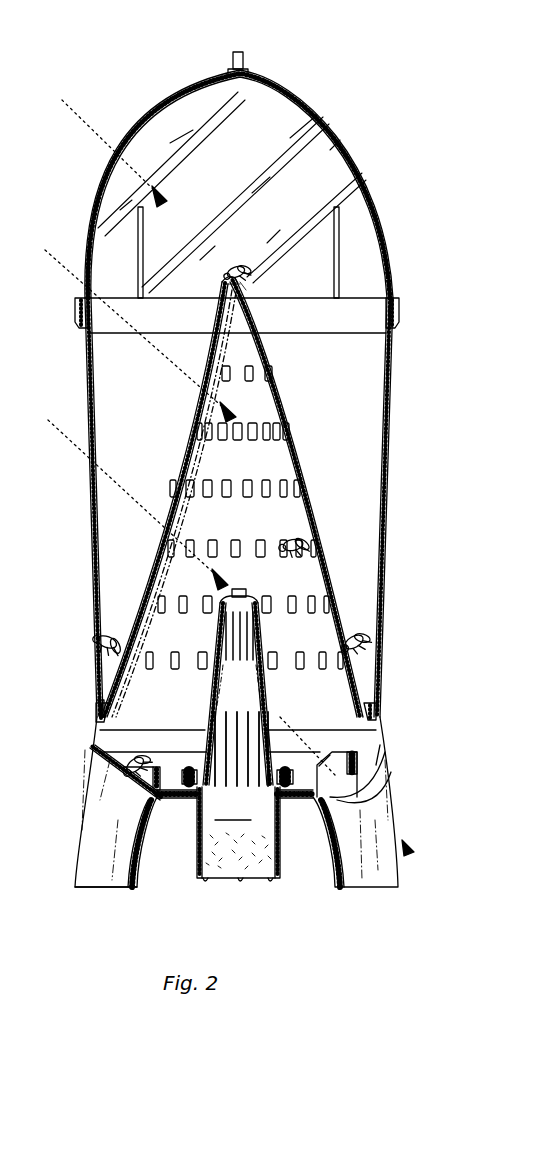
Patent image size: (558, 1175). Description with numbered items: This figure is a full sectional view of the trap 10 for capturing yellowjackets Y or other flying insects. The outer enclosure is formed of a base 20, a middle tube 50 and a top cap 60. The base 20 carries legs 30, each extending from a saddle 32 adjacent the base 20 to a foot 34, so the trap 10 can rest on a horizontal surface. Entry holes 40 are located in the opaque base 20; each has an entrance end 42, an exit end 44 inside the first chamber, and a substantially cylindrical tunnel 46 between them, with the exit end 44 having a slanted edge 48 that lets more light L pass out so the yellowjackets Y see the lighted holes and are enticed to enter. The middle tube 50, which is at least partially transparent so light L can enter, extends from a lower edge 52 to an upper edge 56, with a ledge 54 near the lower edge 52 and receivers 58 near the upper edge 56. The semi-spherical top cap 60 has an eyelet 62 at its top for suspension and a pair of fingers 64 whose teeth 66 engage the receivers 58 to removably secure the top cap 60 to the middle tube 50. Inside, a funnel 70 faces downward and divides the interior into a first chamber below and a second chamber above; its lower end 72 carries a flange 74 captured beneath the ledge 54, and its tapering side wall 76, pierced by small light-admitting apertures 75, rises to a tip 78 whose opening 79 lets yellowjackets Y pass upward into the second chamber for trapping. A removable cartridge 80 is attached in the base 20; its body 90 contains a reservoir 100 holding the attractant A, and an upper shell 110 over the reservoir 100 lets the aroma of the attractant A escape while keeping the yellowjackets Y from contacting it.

The trap 10 is at (336, 92).
The base 20 is at (81, 823).
The legs 30 is at (371, 786).
The saddle 32 is at (110, 778).
The foot 34 is at (104, 888).
The entry holes 40 is at (337, 783).
The entrance end 42 is at (367, 800).
The exit end 44 is at (341, 750).
The tunnel 46 is at (381, 744).
The slanted edge 48 is at (328, 752).
The middle tube 50 is at (242, 507).
The lower edge 52 is at (97, 673).
The ledge 54 is at (98, 703).
The upper edge 56 is at (88, 352).
The receivers 58 is at (77, 311).
The top cap 60 is at (243, 158).
The eyelet 62 is at (234, 60).
The fingers 64 is at (104, 232).
The tooth 66 is at (398, 318).
The funnel 70 is at (310, 417).
The lower end 72 is at (364, 688).
The flange 74 is at (110, 733).
The apertures 75 is at (197, 487).
The tapering side wall 76 is at (308, 556).
The tip 78 is at (220, 285).
The opening 79 is at (258, 276).
The cartridge 80 is at (225, 809).
The body 90 is at (218, 855).
The reservoir 100 is at (235, 809).
The upper shell 110 is at (208, 694).
The light L is at (70, 104).
The yellowjackets Y is at (161, 434).
The attractant A is at (288, 870).